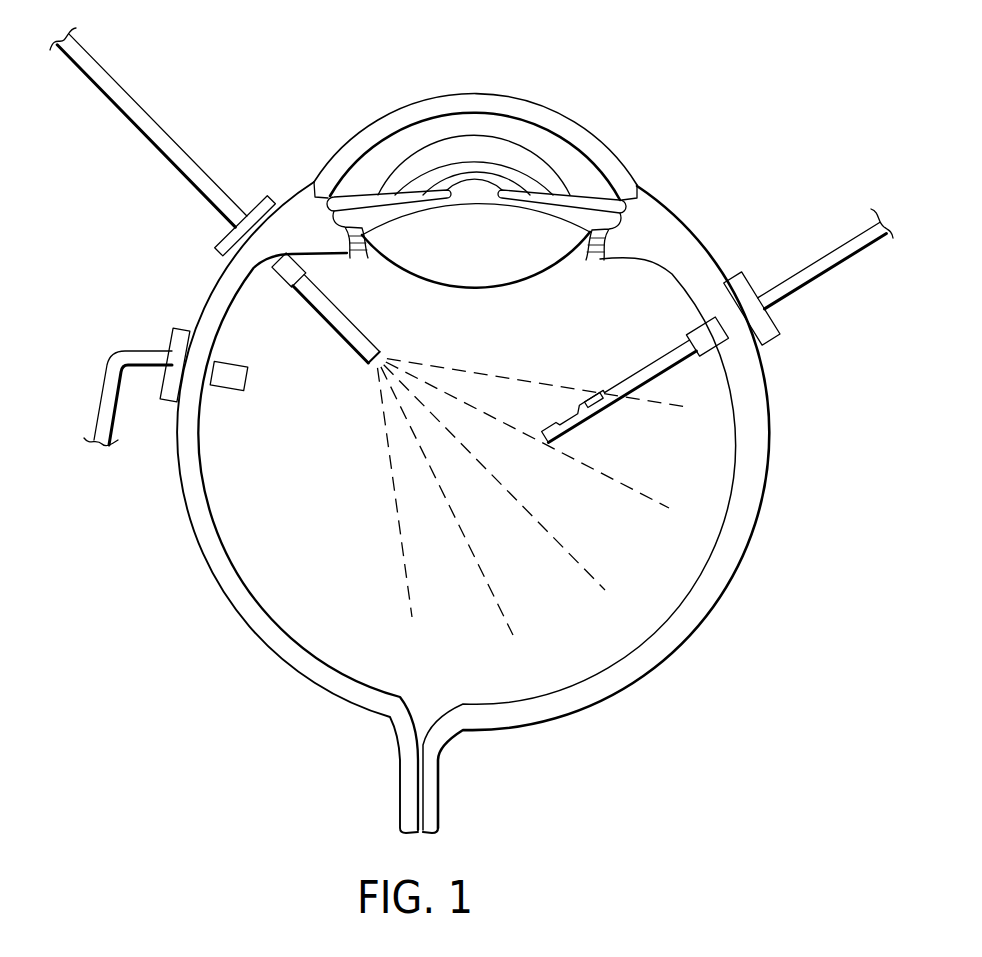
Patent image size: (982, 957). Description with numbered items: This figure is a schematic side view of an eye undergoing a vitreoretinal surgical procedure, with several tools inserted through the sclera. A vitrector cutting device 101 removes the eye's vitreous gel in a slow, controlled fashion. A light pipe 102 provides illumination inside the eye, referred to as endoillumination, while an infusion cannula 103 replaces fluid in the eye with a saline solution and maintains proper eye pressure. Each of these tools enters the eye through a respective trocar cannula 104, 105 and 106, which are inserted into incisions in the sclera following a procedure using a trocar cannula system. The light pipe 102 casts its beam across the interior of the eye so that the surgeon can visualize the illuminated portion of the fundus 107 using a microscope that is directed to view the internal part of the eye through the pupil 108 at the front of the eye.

The vitrector cutting device 101 is at (840, 262).
The light pipe 102 is at (122, 88).
The infusion cannula 103 is at (102, 402).
The trocar cannula 104 is at (753, 274).
The trocar cannula 105 is at (222, 234).
The trocar cannula 106 is at (170, 343).
The illuminated portion of the fundus 107 is at (406, 585).
The pupil 108 is at (478, 185).